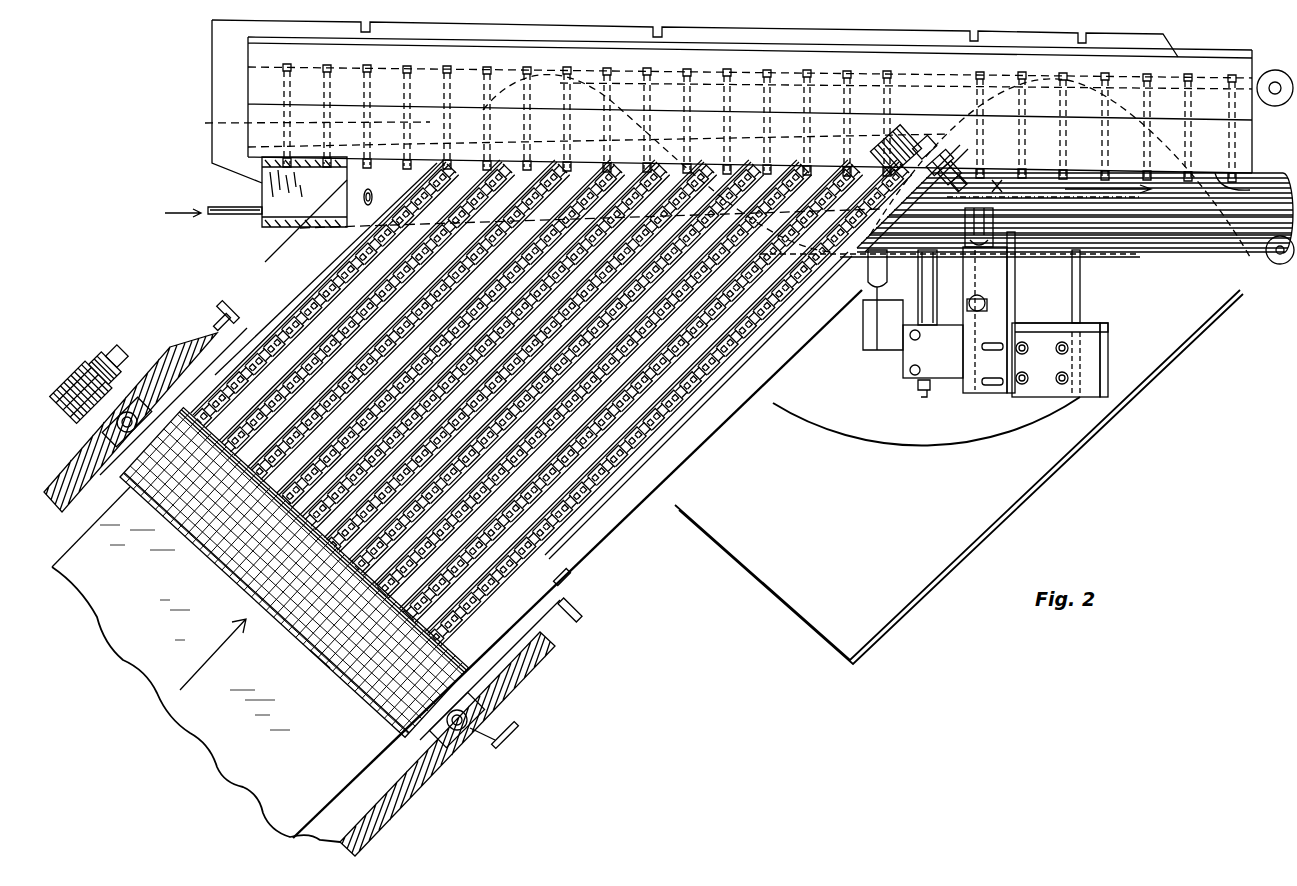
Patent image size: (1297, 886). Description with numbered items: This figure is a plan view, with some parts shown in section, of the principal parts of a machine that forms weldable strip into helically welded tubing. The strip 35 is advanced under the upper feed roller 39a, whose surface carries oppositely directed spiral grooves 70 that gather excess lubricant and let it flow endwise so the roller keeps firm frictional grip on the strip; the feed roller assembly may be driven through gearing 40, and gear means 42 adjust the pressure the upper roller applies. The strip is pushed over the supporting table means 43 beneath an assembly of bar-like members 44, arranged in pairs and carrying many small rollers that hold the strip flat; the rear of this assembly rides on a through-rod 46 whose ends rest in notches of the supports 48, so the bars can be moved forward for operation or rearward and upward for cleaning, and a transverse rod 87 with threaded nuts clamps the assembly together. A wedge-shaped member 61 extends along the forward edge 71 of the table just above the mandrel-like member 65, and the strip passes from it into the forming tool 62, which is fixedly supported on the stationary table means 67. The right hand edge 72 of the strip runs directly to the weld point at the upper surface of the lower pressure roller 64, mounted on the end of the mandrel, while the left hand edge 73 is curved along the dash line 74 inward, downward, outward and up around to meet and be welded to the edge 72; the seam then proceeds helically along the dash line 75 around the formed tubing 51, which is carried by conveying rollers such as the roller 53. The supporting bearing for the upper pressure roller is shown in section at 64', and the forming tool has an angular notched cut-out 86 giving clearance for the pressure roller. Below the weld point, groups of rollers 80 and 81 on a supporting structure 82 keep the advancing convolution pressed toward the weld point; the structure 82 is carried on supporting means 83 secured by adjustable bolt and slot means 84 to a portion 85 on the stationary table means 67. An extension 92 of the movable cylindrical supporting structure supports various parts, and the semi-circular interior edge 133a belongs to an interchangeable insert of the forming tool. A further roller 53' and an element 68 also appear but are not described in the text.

The strip 35 is at (250, 768).
The upper feed roller 39a is at (320, 647).
The gearing 40 is at (120, 365).
The gear means 42 is at (132, 412).
The supporting table means 43 is at (690, 510).
The bar-like members 44 is at (671, 426).
The through-rod 46 is at (230, 303).
The supports 48 is at (222, 318).
The formed tubing 51 is at (1162, 258).
The roller 53 is at (1275, 72).
The roller 53' is at (1271, 269).
The wedge-shaped member 61 is at (352, 180).
The forming tool 62 is at (255, 88).
The lower pressure roller 64 is at (938, 125).
The supporting bearing for the upper pressure roller 64' is at (898, 133).
The mandrel-like member 65 is at (262, 190).
The stationary table means 67 is at (1115, 348).
The feed bar 68 is at (220, 215).
The spiral grooves 70 is at (215, 560).
The forward edge of the supporting table 71 is at (298, 232).
The right hand edge of the strip 72 is at (733, 372).
The left hand edge of the strip 73 is at (330, 276).
The dash line 74 is at (500, 100).
The dash line 75 is at (1060, 168).
The group of rollers 80 is at (868, 268).
The group of rollers 81 is at (993, 212).
The supporting structure 82 is at (892, 343).
The supporting means 83 is at (1013, 297).
The adjustable bolt and slot means 84 is at (1000, 383).
The portion 85 is at (1080, 311).
The notched cut-out 86 is at (958, 166).
The transverse rod 87 is at (555, 553).
The extension 92 is at (985, 490).
The interior edge of insert 133a is at (210, 124).